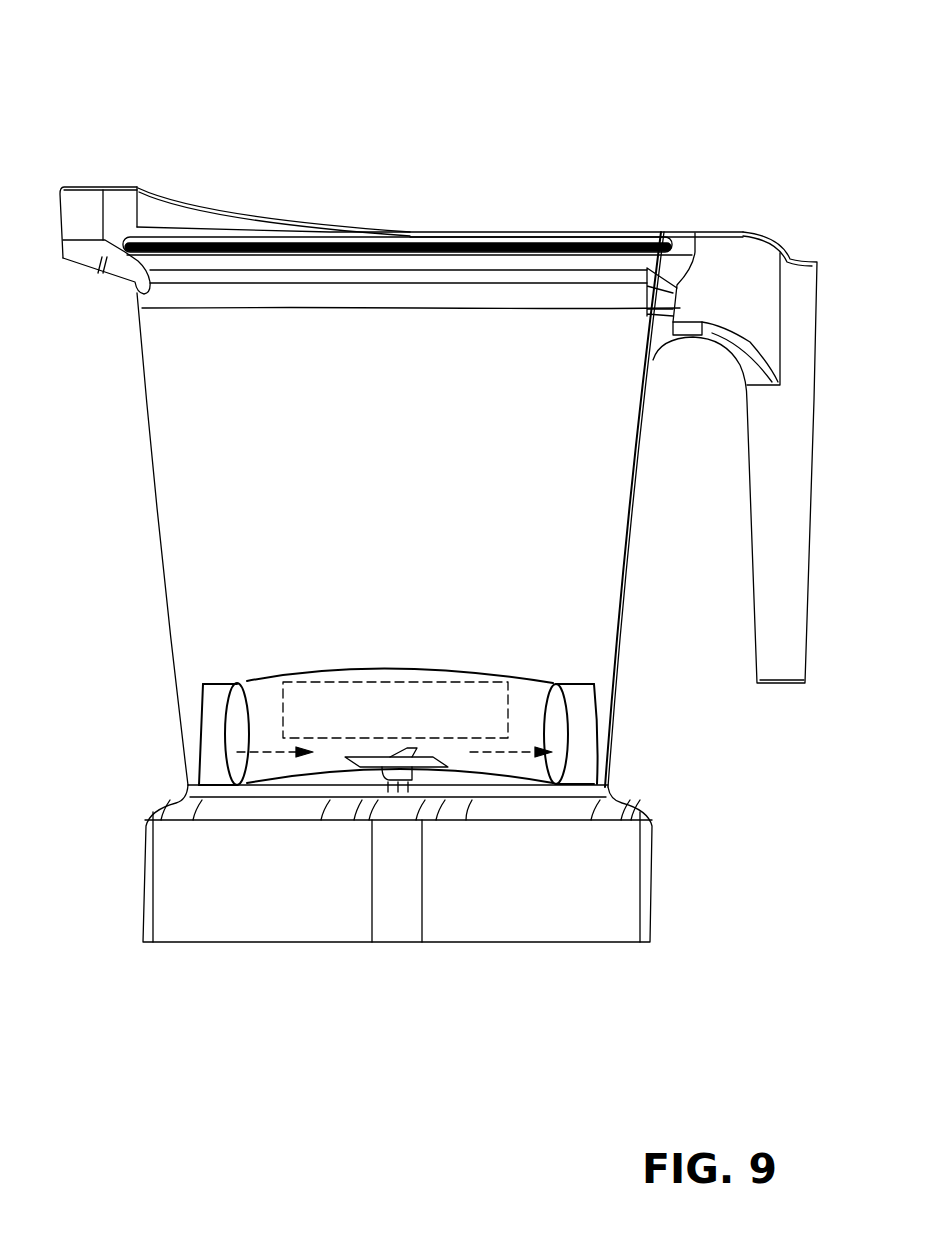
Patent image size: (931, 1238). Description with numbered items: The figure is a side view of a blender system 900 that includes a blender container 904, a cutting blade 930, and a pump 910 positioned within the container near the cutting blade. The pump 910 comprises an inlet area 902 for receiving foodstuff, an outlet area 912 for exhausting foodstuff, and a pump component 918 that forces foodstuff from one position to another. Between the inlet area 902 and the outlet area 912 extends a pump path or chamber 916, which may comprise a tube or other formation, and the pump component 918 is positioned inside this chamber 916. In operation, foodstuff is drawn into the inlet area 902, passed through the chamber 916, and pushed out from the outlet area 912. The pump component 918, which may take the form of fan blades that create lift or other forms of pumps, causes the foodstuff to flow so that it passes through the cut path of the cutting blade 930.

The blender system 900 is at (149, 94).
The blender container 904 is at (551, 217).
The pump 910 is at (467, 653).
The outlet area 912 is at (213, 747).
The inlet area 902 is at (573, 752).
The pump path or chamber 916 is at (265, 680).
The pump component 918 is at (353, 690).
The cutting blade 930 is at (416, 780).